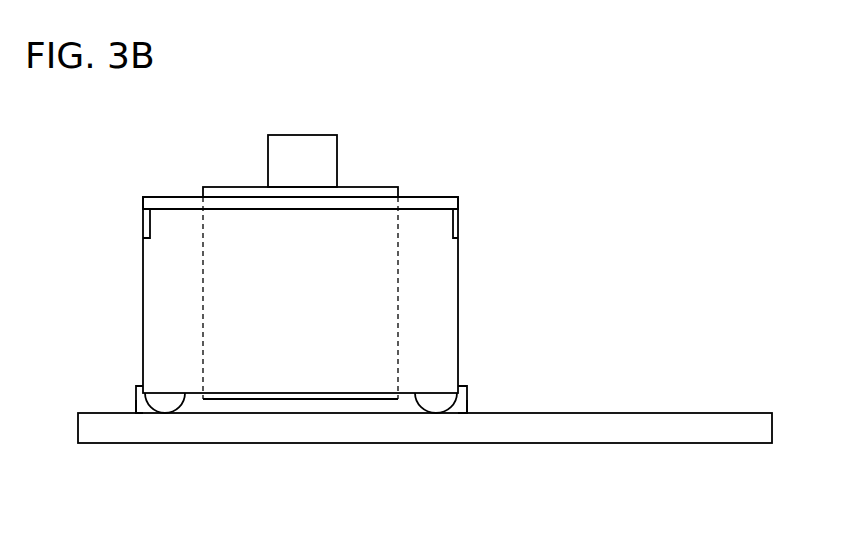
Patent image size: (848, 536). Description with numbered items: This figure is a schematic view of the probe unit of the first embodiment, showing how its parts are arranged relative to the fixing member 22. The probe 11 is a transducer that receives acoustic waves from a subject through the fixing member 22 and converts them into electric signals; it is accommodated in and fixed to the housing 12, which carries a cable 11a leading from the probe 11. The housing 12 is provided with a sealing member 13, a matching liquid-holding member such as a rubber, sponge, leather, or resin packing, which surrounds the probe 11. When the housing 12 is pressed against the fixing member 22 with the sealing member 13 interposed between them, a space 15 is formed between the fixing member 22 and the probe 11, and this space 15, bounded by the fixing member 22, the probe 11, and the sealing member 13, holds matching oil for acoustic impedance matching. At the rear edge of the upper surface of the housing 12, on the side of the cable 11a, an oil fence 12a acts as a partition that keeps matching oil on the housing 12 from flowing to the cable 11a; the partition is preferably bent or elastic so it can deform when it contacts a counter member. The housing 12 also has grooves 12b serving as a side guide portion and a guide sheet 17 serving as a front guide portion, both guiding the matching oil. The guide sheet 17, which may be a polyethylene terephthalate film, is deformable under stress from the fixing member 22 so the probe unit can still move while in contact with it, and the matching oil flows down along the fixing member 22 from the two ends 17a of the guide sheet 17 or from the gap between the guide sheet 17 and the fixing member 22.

The probe 11 is at (323, 400).
The cable 11a is at (320, 158).
The housing 12 is at (147, 288).
The oil fence 12a is at (426, 200).
The grooves 12b is at (453, 222).
The sealing member 13 is at (138, 395).
The space 15 is at (212, 407).
The guide sheet 17 is at (138, 405).
The ends of the guide sheet 17a is at (137, 406).
The fixing member 22 is at (248, 430).